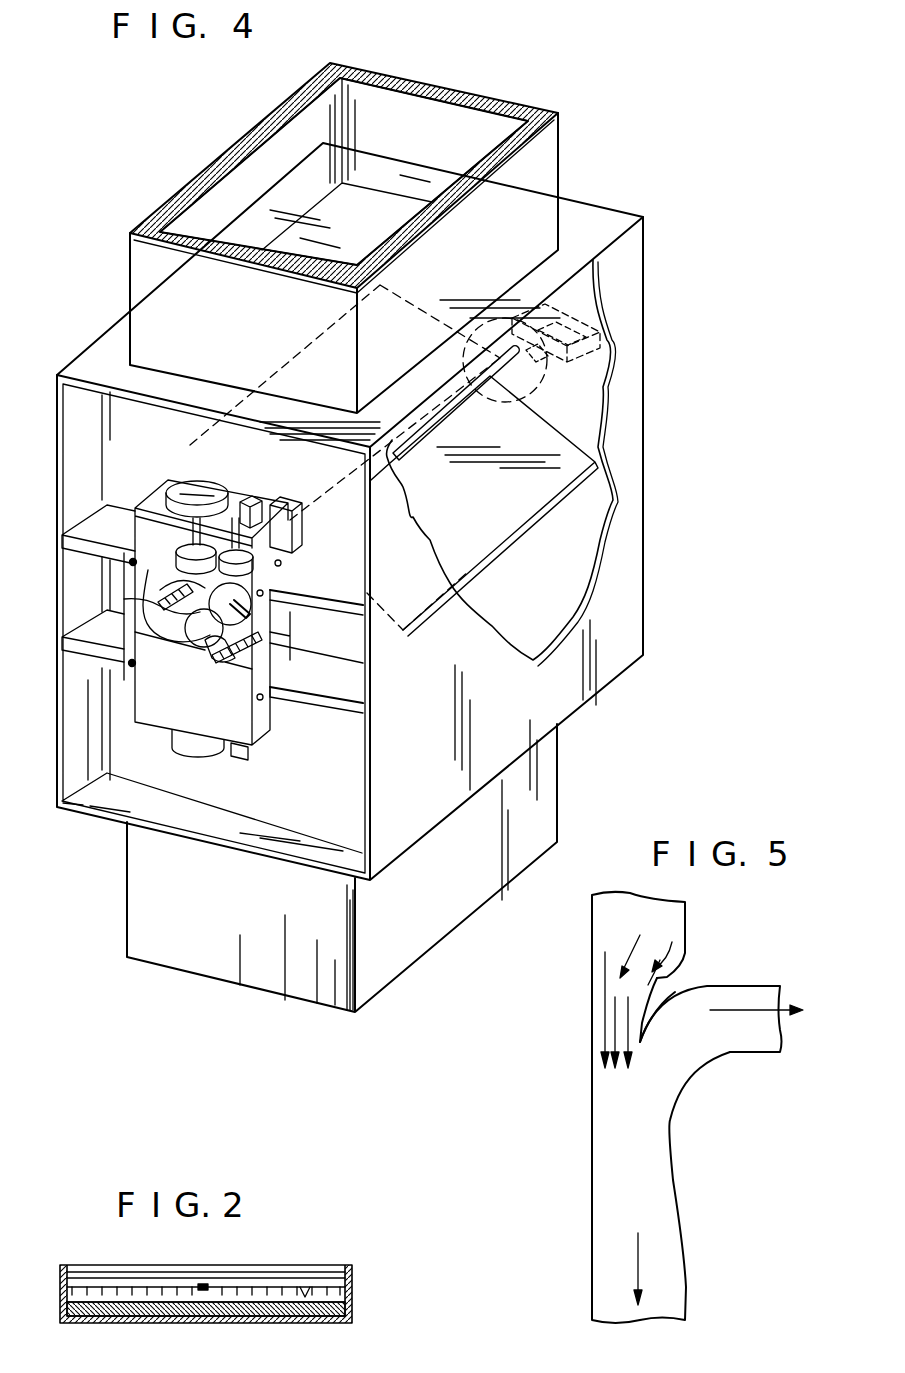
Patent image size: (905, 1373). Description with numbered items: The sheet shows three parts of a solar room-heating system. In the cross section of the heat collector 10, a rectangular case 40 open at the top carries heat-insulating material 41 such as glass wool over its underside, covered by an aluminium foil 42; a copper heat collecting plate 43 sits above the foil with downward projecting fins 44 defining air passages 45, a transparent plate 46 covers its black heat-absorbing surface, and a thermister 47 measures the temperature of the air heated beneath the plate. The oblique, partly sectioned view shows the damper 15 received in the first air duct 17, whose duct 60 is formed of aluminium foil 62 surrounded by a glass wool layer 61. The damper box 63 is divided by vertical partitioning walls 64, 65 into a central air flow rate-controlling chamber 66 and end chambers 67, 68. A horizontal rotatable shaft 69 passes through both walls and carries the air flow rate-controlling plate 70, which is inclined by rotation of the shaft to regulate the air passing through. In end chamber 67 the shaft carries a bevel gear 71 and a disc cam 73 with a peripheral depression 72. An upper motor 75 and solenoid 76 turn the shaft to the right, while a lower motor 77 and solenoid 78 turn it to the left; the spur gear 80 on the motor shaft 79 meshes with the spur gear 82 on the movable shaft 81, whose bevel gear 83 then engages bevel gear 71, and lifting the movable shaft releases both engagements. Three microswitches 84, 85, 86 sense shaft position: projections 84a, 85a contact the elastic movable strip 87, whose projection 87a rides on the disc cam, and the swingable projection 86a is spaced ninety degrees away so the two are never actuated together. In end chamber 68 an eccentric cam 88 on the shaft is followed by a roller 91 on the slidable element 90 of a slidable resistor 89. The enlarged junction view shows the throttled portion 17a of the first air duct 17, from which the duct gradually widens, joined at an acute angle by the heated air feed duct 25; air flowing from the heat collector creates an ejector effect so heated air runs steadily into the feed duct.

In FIG. 2, the heat collector 10 is at (240, 1265).
In FIG. 4, the damper 15 is at (566, 740).
In FIG. 4, the first air duct 17 is at (124, 898).
In FIG. 5, the first air duct 17 is at (591, 1163).
In FIG. 5, the throttled portion 17a is at (671, 977).
In FIG. 5, the heated air feed duct 25 is at (746, 985).
In FIG. 2, the rectangular case 40 is at (243, 1320).
In FIG. 2, the heat-insulating material 41 is at (192, 1310).
In FIG. 2, the aluminium foil 42 is at (142, 1308).
In FIG. 2, the heat collecting plate 43 is at (277, 1288).
In FIG. 2, the fins 44 is at (306, 1294).
In FIG. 2, the air passages 45 is at (118, 1290).
In FIG. 2, the transparent plate 46 is at (90, 1274).
In FIG. 2, the thermister 47 is at (203, 1288).
In FIG. 4, the duct 60 is at (130, 282).
In FIG. 4, the glass wool layer 61 is at (190, 198).
In FIG. 4, the aluminium foil 62 is at (235, 163).
In FIG. 4, the damper box 63 is at (577, 700).
In FIG. 4, the partitioning wall 64 is at (120, 417).
In FIG. 4, the partitioning wall 65 is at (590, 413).
In FIG. 4, the air flow rate-controlling chamber 66 is at (534, 586).
In FIG. 4, the end chamber 67 is at (343, 816).
In FIG. 4, the end chamber 68 is at (590, 303).
In FIG. 4, the rotatable shaft 69 is at (458, 405).
In FIG. 4, the air flow rate-controlling plate 70 is at (553, 503).
In FIG. 4, the bevel gear 71 is at (175, 598).
In FIG. 4, the depression 72 is at (186, 618).
In FIG. 4, the disc cam 73 is at (170, 650).
In FIG. 4, the motor 75 is at (185, 483).
In FIG. 4, the solenoid 76 is at (247, 500).
In FIG. 4, the motor 77 is at (203, 750).
In FIG. 4, the solenoid 78 is at (236, 756).
In FIG. 4, the rotatable shaft 79 is at (135, 522).
In FIG. 4, the spur gear 80 is at (154, 567).
In FIG. 4, the movable shaft 81 is at (285, 506).
In FIG. 4, the spur gear 82 is at (297, 578).
In FIG. 4, the bevel gear 83 is at (262, 602).
In FIG. 4, the microswitch 84 is at (232, 682).
In FIG. 4, the projection 84a is at (220, 652).
In FIG. 4, the microswitch 85 is at (246, 654).
In FIG. 4, the projection 85a is at (270, 672).
In FIG. 4, the microswitch 86 is at (150, 618).
In FIG. 4, the swingable projection 86a is at (124, 599).
In FIG. 4, the movable strip 87 is at (305, 650).
In FIG. 4, the projection 87a is at (270, 634).
In FIG. 4, the eccentric cam 88 is at (527, 392).
In FIG. 4, the slidable resistor 89 is at (598, 340).
In FIG. 4, the slidable element 90 is at (590, 352).
In FIG. 4, the roller 91 is at (546, 364).